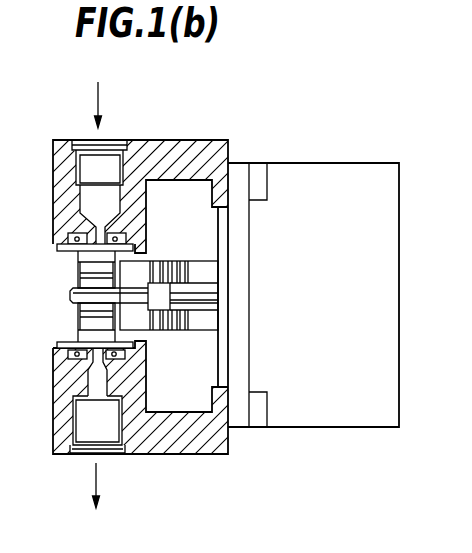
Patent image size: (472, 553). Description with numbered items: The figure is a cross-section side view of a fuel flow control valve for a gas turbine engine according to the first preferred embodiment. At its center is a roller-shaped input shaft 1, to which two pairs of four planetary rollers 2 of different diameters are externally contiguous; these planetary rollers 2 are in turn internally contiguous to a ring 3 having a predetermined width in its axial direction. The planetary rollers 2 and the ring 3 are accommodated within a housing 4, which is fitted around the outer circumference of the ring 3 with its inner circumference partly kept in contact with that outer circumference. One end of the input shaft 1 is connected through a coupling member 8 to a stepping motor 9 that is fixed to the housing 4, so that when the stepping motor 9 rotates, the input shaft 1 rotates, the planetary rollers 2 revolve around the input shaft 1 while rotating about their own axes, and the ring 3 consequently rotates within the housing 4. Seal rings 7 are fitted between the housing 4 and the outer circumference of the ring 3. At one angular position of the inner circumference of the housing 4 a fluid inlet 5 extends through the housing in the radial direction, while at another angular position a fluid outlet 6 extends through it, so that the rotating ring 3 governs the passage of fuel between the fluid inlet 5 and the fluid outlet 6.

The input shaft 1 is at (70, 295).
The planetary rollers 2 is at (78, 262).
The ring 3 is at (57, 246).
The housing 4 is at (52, 160).
The fluid inlet 5 is at (117, 140).
The fluid outlet 6 is at (102, 455).
The seal rings 7 is at (53, 372).
The coupling member 8 is at (170, 331).
The stepping motor 9 is at (287, 427).